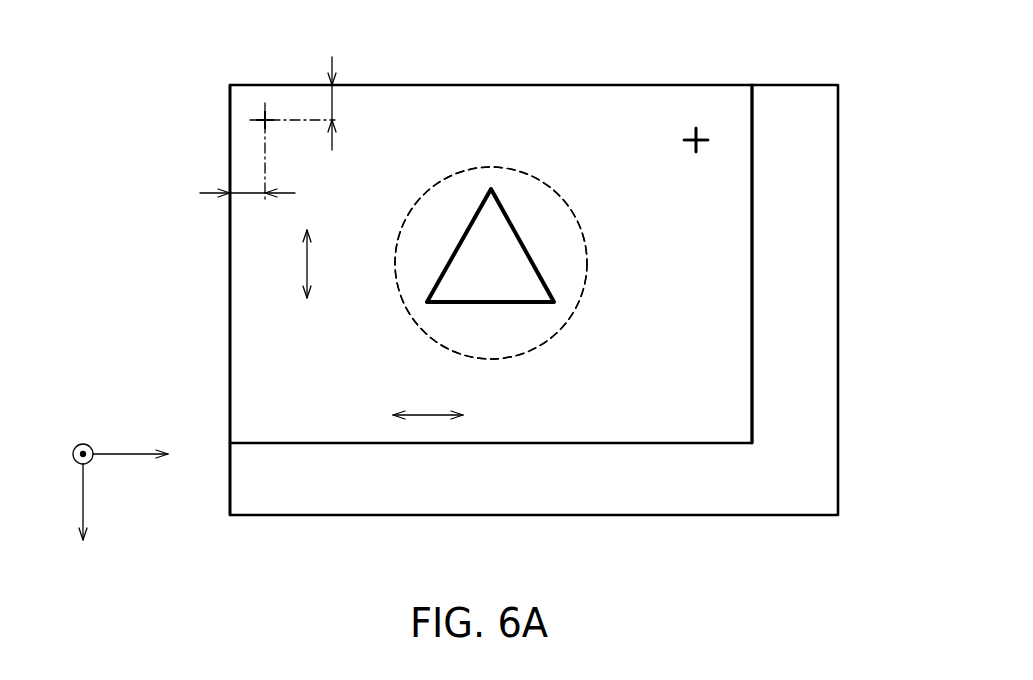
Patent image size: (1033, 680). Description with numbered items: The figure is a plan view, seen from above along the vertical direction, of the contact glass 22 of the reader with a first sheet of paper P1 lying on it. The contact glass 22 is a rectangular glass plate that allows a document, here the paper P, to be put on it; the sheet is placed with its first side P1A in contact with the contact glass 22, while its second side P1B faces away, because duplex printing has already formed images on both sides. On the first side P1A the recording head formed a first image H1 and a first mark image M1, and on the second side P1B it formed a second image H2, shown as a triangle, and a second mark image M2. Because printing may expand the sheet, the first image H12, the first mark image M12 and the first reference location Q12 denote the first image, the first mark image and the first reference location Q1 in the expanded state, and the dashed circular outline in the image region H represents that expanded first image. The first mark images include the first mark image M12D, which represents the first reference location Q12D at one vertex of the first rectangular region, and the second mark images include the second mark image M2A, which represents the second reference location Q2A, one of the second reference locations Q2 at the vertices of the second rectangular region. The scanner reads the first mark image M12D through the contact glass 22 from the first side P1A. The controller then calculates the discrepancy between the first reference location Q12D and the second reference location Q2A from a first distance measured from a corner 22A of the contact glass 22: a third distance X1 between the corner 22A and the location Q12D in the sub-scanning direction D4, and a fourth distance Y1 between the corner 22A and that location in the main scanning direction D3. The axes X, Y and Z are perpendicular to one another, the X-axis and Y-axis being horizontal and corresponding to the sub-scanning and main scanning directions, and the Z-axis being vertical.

The contact glass 22 is at (820, 85).
The corner of the contact glass 22A is at (230, 85).
The paper P is at (491, 298).
The first sheet of paper P1 is at (611, 443).
The first side P1A is at (752, 318).
The second side P1B is at (720, 258).
The hole region H is at (604, 258).
The first image H1 is at (534, 263).
The first image H12 is at (555, 190).
The second image H2 is at (537, 303).
The second reference location Q2 is at (677, 79).
The second reference location Q2A is at (696, 138).
The second mark image M2 is at (741, 95).
The second mark image M2A is at (700, 138).
The first mark image M1 is at (186, 149).
The first mark image M12 is at (186, 149).
The first mark image M12D is at (264, 120).
The first reference location Q1 is at (155, 138).
The first reference location Q12 is at (155, 138).
The first reference location Q12D is at (264, 122).
The fourth distance Y1 is at (333, 103).
The third distance X1 is at (248, 196).
The main scanning direction D3 is at (308, 262).
The sub-scanning direction D4 is at (422, 413).
The X-axis X is at (142, 454).
The Y-axis Y is at (82, 521).
The Z-axis Z is at (76, 446).